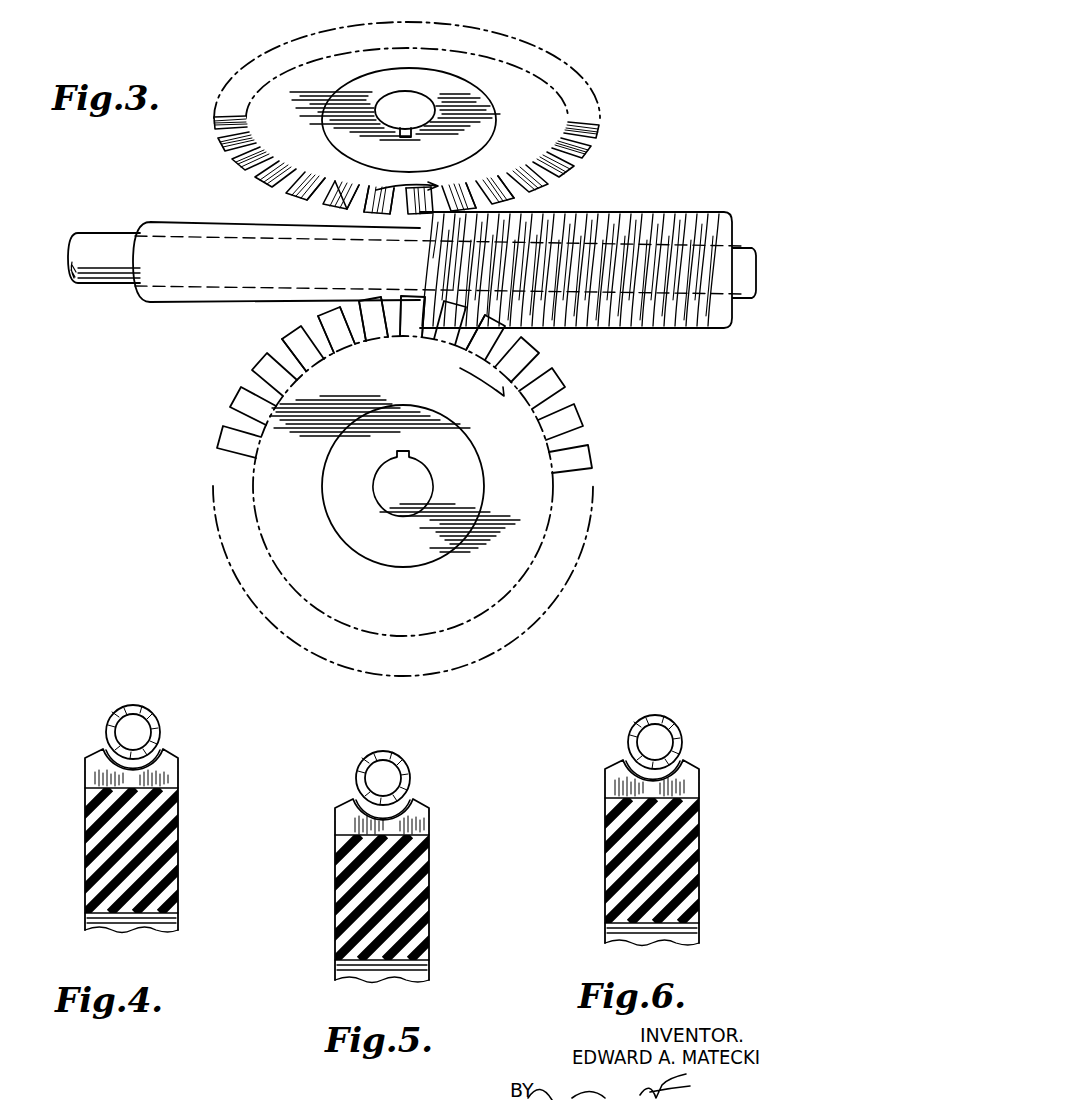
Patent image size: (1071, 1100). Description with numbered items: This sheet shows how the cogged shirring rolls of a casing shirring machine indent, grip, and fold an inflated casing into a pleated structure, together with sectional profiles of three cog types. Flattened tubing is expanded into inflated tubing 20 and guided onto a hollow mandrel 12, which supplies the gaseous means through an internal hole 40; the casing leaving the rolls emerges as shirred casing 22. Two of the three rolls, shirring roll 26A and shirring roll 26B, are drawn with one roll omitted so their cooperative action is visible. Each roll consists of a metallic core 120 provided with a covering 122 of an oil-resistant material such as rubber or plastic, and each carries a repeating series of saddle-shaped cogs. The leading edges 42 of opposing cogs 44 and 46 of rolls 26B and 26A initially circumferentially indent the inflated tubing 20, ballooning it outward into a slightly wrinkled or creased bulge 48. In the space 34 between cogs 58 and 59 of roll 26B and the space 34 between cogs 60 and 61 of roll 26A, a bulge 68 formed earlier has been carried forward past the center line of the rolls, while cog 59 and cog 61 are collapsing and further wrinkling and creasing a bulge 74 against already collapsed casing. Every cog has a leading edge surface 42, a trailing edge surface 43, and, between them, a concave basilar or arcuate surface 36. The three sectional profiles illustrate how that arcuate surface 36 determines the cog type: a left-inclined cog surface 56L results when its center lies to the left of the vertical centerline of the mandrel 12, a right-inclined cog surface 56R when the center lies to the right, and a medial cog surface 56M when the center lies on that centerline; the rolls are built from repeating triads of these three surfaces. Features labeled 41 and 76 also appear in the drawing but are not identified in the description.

In FIG. 3, the hollow mandrel 12 is at (104, 232).
In FIG. 4, the hollow mandrel 12 is at (151, 715).
In FIG. 5, the hollow mandrel 12 is at (401, 760).
In FIG. 6, the hollow mandrel 12 is at (674, 722).
In FIG. 3, the inflated tubing 20 is at (228, 290).
In FIG. 3, the shirred casing 22 is at (660, 212).
In FIG. 3, the shirring roll 26A is at (589, 397).
In FIG. 3, the shirring roll 26B is at (601, 86).
In FIG. 3, the space between cogs 34 is at (410, 214).
In FIG. 4, the arcuate surface 36 is at (104, 755).
In FIG. 5, the arcuate surface 36 is at (412, 802).
In FIG. 6, the arcuate surface 36 is at (626, 764).
In FIG. 3, the internal hole 40 is at (75, 270).
In FIG. 4, the internal hole 40 is at (140, 730).
In FIG. 5, the internal hole 40 is at (392, 776).
In FIG. 6, the internal hole 40 is at (664, 740).
In FIG. 3, the gear teeth 41 is at (296, 193).
In FIG. 4, the gear teeth 41 is at (87, 782).
In FIG. 5, the gear teeth 41 is at (340, 830).
In FIG. 6, the gear teeth 41 is at (610, 792).
In FIG. 3, the leading edge surface 42 is at (358, 303).
In FIG. 3, the trailing edge surface 43 is at (328, 308).
In FIG. 3, the cog 44 is at (352, 206).
In FIG. 3, the cog 46 is at (350, 322).
In FIG. 3, the bulge 48 is at (370, 322).
In FIG. 4, the left-inclined cog surface 56L is at (142, 833).
In FIG. 5, the right-inclined cog surface 56R is at (385, 873).
In FIG. 6, the medial cog surface 56M is at (655, 842).
In FIG. 3, the cog 58 is at (380, 240).
In FIG. 3, the cog 59 is at (450, 245).
In FIG. 3, the cog 60 is at (395, 302).
In FIG. 3, the cog 61 is at (438, 312).
In FIG. 3, the bulge 68 is at (412, 330).
In FIG. 3, the bulge 74 is at (450, 222).
In FIG. 3, the tooth face 76 is at (482, 215).
In FIG. 3, the metallic core 120 is at (478, 142).
In FIG. 3, the covering 122 is at (582, 145).
In FIG. 4, the covering 122 is at (172, 850).
In FIG. 5, the covering 122 is at (340, 903).
In FIG. 6, the covering 122 is at (612, 868).